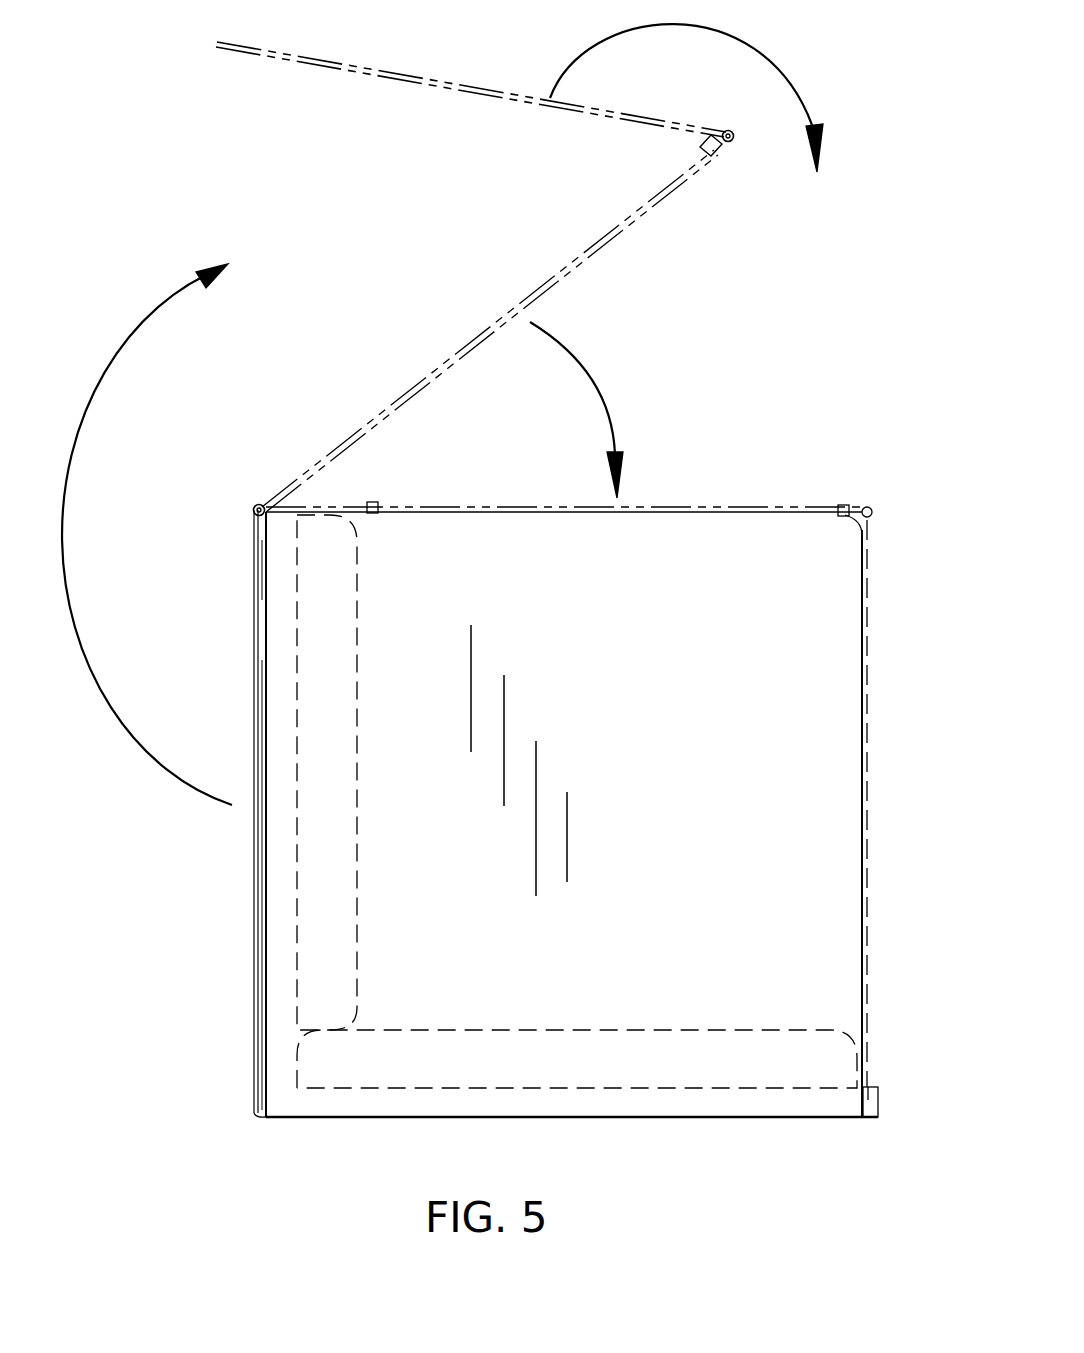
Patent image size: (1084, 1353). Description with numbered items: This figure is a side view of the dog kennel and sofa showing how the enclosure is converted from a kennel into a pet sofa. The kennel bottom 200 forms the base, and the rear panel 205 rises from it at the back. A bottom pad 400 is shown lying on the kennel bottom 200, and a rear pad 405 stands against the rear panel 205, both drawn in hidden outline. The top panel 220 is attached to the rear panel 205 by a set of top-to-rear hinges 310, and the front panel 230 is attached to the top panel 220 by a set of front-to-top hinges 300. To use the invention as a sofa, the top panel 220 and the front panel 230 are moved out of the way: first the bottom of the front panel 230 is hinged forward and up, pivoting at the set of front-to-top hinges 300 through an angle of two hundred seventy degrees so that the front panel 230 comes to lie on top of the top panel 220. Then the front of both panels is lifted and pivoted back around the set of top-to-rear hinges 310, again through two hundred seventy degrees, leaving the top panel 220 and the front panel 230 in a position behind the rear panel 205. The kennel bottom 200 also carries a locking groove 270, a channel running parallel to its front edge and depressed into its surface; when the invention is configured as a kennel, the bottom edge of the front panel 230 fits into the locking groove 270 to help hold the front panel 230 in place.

The kennel bottom 200 is at (413, 1113).
The rear panel 205 is at (282, 937).
The top panel 220 is at (322, 450).
The front panel 230 is at (385, 68).
The locking groove 270 is at (868, 1090).
The set of front-to-top hinges 300 is at (735, 140).
The set of top-to-rear hinges 310 is at (254, 505).
The bottom pad 400 is at (690, 1058).
The rear pad 405 is at (326, 830).